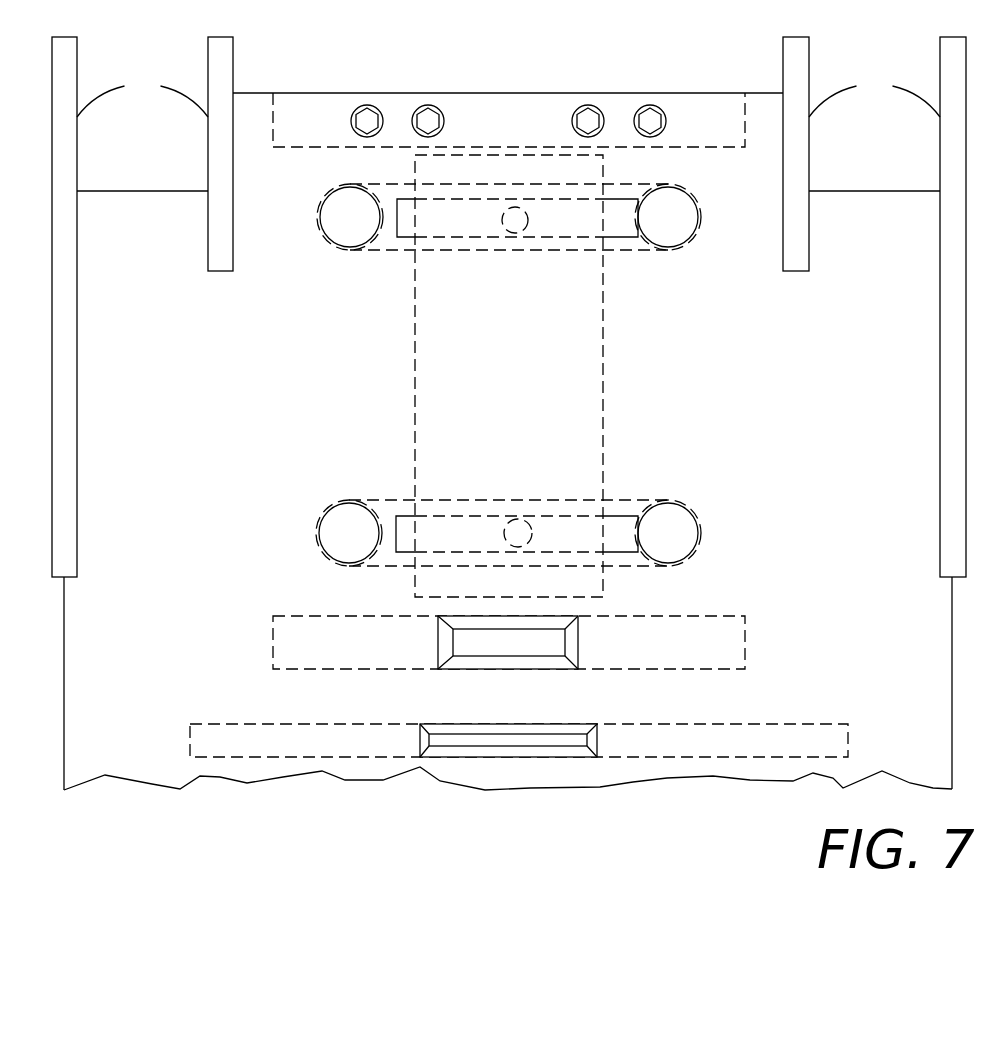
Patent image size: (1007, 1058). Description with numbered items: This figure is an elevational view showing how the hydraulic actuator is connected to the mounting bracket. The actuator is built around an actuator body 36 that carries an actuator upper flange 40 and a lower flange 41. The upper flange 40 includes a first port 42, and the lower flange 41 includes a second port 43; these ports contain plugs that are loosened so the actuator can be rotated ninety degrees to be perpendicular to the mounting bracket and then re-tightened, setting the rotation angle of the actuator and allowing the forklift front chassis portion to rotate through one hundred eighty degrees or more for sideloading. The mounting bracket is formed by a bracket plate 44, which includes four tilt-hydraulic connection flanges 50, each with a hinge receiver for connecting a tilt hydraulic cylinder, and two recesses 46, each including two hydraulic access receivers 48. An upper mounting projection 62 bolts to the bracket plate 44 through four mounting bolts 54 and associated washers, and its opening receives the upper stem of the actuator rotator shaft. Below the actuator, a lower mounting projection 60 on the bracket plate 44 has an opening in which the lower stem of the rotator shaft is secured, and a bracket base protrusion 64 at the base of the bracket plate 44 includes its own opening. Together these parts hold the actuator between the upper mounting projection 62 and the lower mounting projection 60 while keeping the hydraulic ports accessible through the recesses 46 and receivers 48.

The actuator body 36 is at (603, 392).
The actuator upper flange 40 is at (624, 256).
The lower flange 41 is at (603, 500).
The first port 42 is at (520, 240).
The second port 43 is at (516, 518).
The bracket plate 44 is at (290, 385).
The recess 46 is at (392, 500).
The hydraulic access receiver 48 is at (336, 210).
The tilt-hydraulic connection flange 50 is at (509, 413).
The mounting bolt 54 is at (428, 104).
The lower mounting projection 60 is at (745, 616).
The upper mounting projection 62 is at (273, 110).
The bracket base protrusion 64 is at (826, 724).